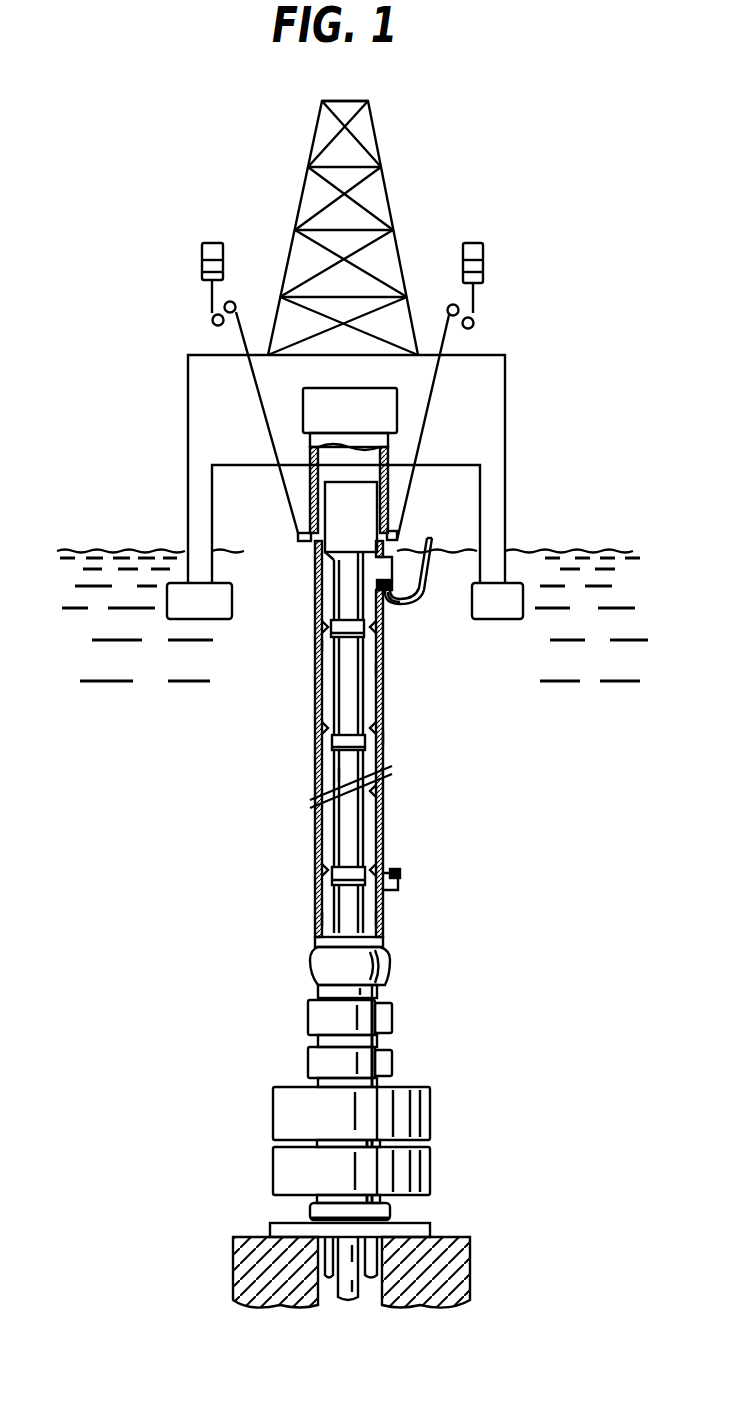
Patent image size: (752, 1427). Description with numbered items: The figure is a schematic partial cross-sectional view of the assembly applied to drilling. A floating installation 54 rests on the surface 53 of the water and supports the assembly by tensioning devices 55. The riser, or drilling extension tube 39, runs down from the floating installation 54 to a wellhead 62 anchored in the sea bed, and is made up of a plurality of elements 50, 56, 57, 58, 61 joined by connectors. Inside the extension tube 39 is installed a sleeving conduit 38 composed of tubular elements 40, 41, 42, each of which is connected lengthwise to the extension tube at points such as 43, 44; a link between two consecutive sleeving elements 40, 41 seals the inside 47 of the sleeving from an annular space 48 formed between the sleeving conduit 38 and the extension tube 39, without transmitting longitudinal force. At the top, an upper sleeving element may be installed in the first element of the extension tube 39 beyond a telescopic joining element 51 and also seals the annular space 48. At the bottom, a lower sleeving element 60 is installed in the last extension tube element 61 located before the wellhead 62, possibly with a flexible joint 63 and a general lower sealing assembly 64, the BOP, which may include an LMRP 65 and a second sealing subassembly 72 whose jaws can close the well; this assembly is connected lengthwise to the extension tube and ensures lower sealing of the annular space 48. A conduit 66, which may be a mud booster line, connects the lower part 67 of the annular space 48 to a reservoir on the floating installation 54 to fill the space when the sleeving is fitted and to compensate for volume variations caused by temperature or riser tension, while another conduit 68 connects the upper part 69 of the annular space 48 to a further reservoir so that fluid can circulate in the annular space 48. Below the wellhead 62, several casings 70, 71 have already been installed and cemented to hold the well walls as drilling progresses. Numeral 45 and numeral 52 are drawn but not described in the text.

The sleeving conduit 38 is at (377, 668).
The drilling extension tube 39 is at (400, 738).
The sleeving element 40 is at (334, 676).
The sleeving element 41 is at (334, 757).
The sleeving element 42 is at (334, 850).
The lengthwise connection 43 is at (380, 612).
The lengthwise connection 44 is at (382, 722).
The centralizer 45 is at (380, 852).
The inside of the sleeving 47 is at (338, 625).
The annular space 48 is at (324, 588).
The extension tube element 50 is at (316, 560).
The telescopic joining element 51 is at (310, 455).
The riser flange 52 is at (300, 535).
The surface of water 53 is at (100, 549).
The floating installation 54 is at (190, 356).
The tensioning devices 55 is at (208, 243).
The extension tube element 56 is at (317, 646).
The extension tube element 57 is at (337, 775).
The extension tube element 58 is at (316, 818).
The lower sleeving element 60 is at (334, 918).
The last element of the extension tube 61 is at (318, 888).
The wellhead 62 is at (525, 1190).
The flexible joint 63 is at (322, 965).
The general lower sealing assembly (BOP) 64 is at (625, 980).
The LMRP 65 is at (500, 955).
The conduit 66 is at (402, 875).
The lower part of the annular space 67 is at (384, 916).
The conduit 68 is at (433, 572).
The upper part of the annular space 69 is at (392, 603).
The casing 70 is at (333, 1266).
The casing 71 is at (352, 1292).
The sealing subassembly 72 is at (500, 1083).